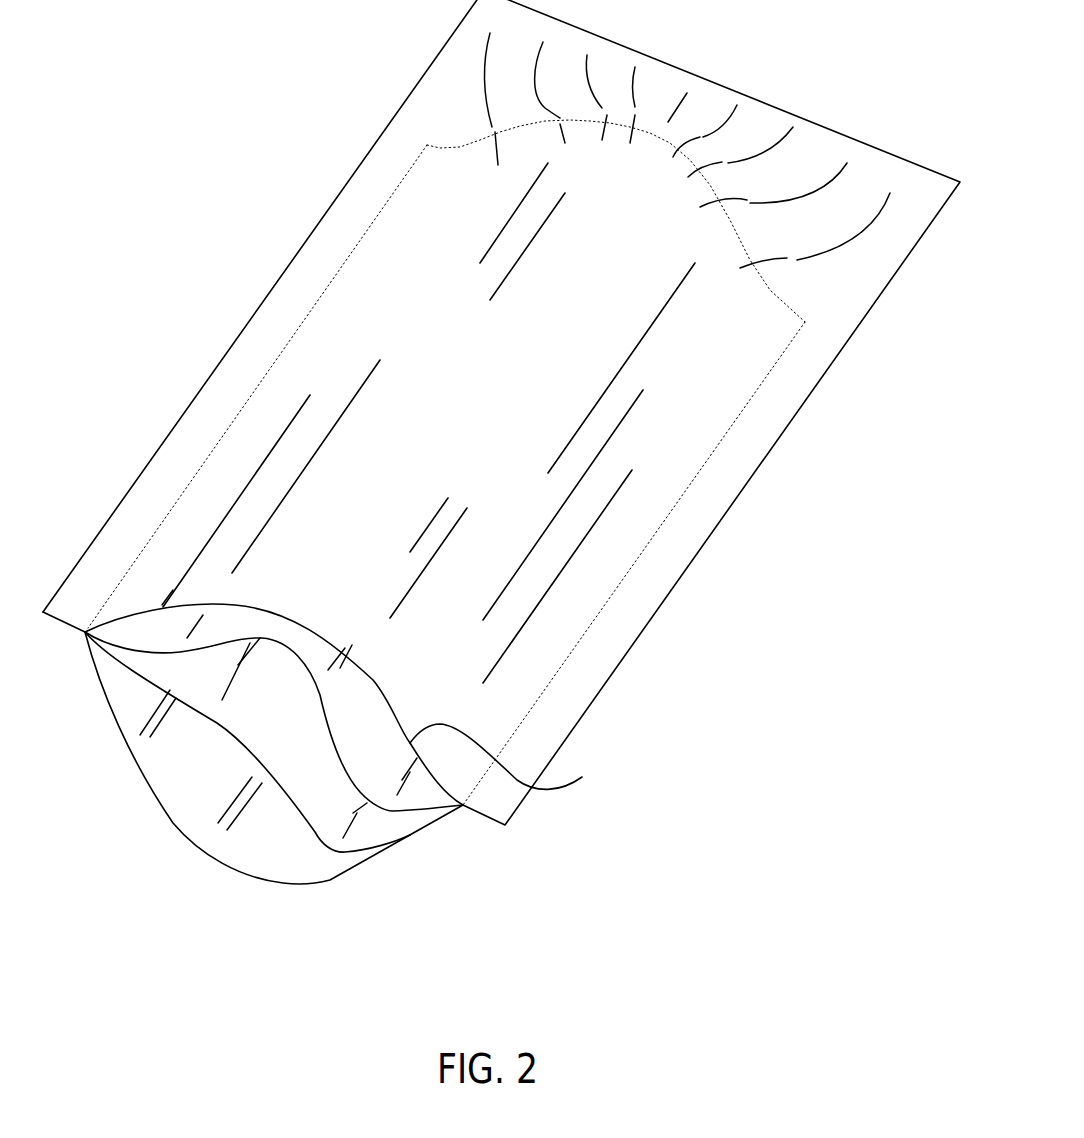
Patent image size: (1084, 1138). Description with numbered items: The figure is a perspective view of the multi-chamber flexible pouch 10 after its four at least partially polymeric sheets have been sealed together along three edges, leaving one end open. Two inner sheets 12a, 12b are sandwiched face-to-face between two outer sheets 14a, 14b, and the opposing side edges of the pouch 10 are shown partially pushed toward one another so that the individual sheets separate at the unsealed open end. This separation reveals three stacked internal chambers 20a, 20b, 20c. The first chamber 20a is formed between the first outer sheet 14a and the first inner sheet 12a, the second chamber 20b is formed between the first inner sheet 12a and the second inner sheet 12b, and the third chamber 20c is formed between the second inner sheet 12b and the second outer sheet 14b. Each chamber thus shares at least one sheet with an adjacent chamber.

The multi-chamber flexible pouch 10 is at (724, 727).
The first inner sheet 12a is at (389, 816).
The second inner sheet 12b is at (330, 850).
The first outer sheet 14a is at (343, 696).
The second outer sheet 14b is at (264, 880).
The first chamber 20a is at (347, 703).
The second chamber 20b is at (253, 710).
The third chamber 20c is at (166, 735).